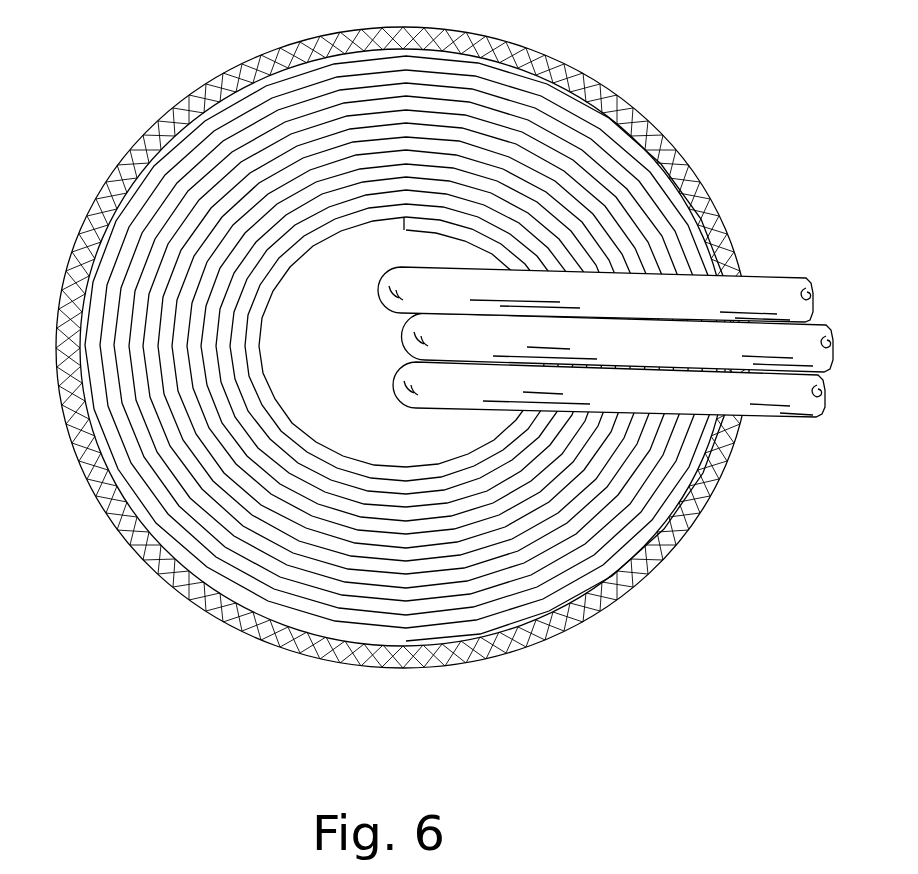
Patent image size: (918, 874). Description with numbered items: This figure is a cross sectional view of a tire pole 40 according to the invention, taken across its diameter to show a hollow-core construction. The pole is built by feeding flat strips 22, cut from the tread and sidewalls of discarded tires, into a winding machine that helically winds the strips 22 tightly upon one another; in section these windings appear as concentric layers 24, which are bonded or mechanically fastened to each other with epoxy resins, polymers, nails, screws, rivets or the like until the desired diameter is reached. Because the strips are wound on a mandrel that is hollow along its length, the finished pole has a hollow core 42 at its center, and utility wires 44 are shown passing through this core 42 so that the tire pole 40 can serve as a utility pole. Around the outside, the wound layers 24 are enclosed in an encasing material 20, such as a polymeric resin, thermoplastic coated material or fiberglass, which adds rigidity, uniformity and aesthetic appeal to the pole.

The encasing material 20 is at (670, 140).
The flat strips 22 is at (147, 217).
The layers 24 is at (625, 513).
The coil assembly 40 is at (436, 365).
The hollow core 42 is at (313, 372).
The utility wires 44 is at (730, 382).